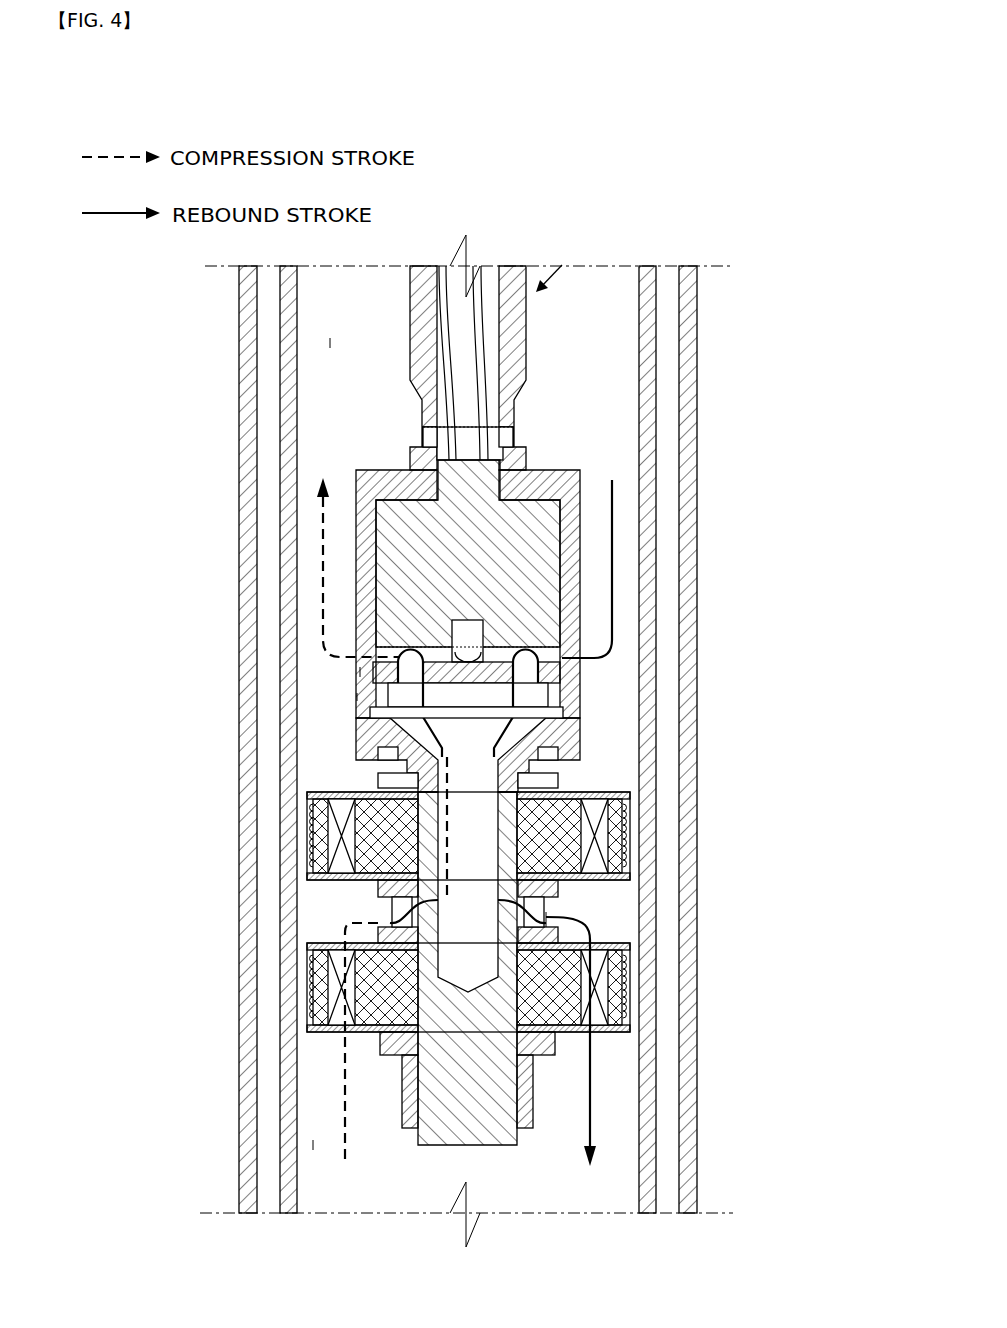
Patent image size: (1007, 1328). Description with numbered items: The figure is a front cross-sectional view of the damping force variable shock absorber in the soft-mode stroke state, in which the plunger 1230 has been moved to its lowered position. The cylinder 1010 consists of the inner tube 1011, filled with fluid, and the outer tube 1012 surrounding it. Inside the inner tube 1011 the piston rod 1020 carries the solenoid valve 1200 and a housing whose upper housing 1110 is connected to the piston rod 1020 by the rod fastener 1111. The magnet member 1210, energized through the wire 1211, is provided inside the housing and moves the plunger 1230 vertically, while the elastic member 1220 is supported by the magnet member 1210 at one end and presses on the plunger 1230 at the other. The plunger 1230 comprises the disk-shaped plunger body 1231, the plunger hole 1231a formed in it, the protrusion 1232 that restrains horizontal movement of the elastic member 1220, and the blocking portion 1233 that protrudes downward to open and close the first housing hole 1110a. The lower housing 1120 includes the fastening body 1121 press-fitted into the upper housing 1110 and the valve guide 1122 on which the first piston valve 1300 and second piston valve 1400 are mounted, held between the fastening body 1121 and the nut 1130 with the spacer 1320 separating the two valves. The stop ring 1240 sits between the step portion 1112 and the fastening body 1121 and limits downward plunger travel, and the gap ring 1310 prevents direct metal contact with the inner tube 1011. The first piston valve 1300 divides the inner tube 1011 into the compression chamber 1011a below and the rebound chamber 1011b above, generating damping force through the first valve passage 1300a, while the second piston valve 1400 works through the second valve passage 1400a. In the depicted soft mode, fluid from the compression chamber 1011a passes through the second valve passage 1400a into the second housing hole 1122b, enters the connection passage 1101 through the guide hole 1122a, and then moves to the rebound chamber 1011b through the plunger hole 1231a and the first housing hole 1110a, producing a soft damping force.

The cylinder 1010 is at (535, 739).
The inner tube 1011 is at (645, 293).
The outer tube 1012 is at (688, 347).
The compression chamber 1011a is at (313, 1145).
The rebound chamber 1011b is at (330, 343).
The piston rod 1020 is at (558, 267).
The wire 1211 is at (472, 295).
The rod fastener 1111 is at (420, 437).
The solenoid valve 1200 is at (364, 530).
The magnet member 1210 is at (548, 545).
The upper housing 1110 is at (365, 592).
The elastic member 1220 is at (485, 628).
The protrusion 1232 is at (560, 658).
The plunger hole 1231a is at (532, 660).
The plunger body 1231 is at (550, 690).
The blocking portion 1233 is at (560, 712).
The plunger 1230 is at (608, 700).
The first housing hole 1110a is at (360, 672).
The connection passage 1101 is at (357, 697).
The fastening body 1121 is at (357, 737).
The lower housing 1120 is at (352, 770).
The step portion 1112 is at (580, 735).
The stop ring 1240 is at (635, 803).
The first piston valve 1300 is at (454, 836).
The first valve passage 1300a is at (340, 850).
The gap ring 1310 is at (635, 835).
The valve guide 1122 is at (380, 882).
The guide hole 1122a is at (372, 918).
The second housing hole 1122b is at (560, 897).
The spacer 1320 is at (560, 913).
The second piston valve 1400 is at (383, 987).
The second valve passage 1400a is at (340, 1005).
The nut 1130 is at (533, 1107).